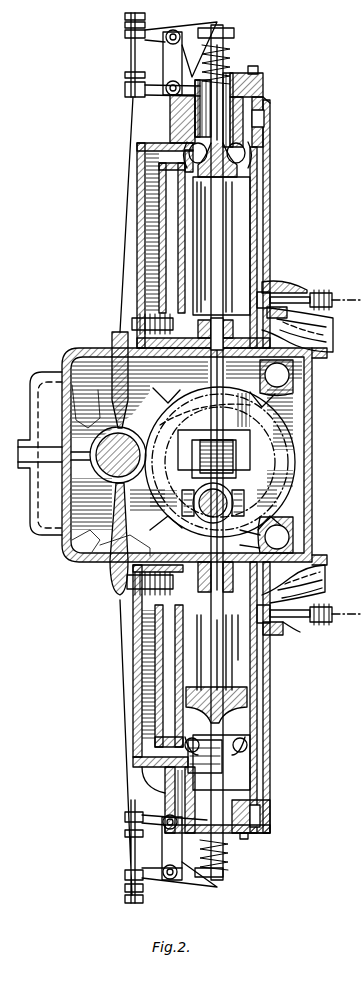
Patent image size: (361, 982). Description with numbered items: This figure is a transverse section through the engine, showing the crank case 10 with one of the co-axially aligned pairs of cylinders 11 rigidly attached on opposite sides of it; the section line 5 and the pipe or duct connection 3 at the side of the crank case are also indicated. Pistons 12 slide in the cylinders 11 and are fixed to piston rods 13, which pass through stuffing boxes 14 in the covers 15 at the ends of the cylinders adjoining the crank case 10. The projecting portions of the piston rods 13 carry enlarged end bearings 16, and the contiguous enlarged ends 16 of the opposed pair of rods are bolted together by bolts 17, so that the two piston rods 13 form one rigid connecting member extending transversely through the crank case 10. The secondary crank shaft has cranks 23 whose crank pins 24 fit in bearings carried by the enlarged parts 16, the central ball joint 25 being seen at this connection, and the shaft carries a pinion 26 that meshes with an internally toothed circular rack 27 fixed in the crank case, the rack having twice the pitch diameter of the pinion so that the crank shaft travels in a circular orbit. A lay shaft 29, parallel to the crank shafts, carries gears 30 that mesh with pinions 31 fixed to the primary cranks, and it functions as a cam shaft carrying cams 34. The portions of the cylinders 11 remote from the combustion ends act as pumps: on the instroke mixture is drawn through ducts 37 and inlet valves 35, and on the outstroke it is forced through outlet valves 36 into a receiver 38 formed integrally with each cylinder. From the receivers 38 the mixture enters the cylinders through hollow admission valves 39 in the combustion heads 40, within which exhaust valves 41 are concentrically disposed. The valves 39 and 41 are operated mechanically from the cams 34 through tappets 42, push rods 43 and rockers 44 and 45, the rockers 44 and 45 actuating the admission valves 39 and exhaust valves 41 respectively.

The outlet pipe 3 is at (40, 453).
The section line 5 is at (110, 327).
The crank case 10 is at (308, 412).
The cylinders 11 is at (221, 483).
The pistons 12 is at (232, 320).
The piston rods 13 is at (223, 378).
The stuffing boxes 14 is at (122, 485).
The covers 15 is at (252, 530).
The enlarged end bearings 16 is at (185, 520).
The bolts 17 is at (235, 518).
The cranks 23 is at (258, 445).
The crank pins 24 is at (294, 525).
The central ball joint 25 is at (234, 505).
The pinion 26 is at (298, 480).
The internally toothed circular rack 27 is at (295, 402).
The lay shaft 29 is at (62, 550).
The gears 30 is at (78, 562).
The pinions 31 is at (165, 418).
The cams 34 is at (68, 382).
The inlet valves 35 is at (280, 288).
The outlet valves 36 is at (140, 312).
The ducts 37 is at (334, 340).
The receiver 38 is at (140, 238).
The admission valves 39 is at (248, 170).
The combustion heads 40 is at (270, 102).
The exhaust valves 41 is at (252, 155).
The tappets 42 is at (112, 348).
The push rods 43 is at (126, 182).
The rocker 44 is at (150, 95).
The rocker 45 is at (150, 43).